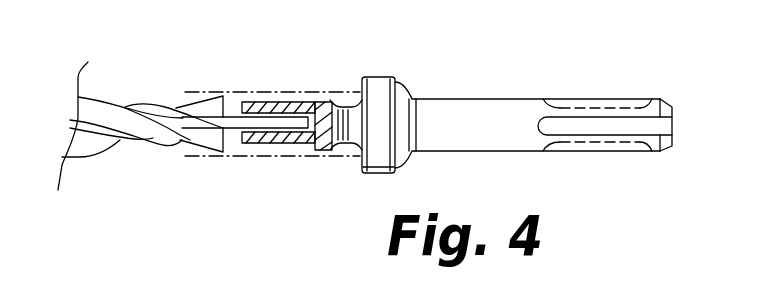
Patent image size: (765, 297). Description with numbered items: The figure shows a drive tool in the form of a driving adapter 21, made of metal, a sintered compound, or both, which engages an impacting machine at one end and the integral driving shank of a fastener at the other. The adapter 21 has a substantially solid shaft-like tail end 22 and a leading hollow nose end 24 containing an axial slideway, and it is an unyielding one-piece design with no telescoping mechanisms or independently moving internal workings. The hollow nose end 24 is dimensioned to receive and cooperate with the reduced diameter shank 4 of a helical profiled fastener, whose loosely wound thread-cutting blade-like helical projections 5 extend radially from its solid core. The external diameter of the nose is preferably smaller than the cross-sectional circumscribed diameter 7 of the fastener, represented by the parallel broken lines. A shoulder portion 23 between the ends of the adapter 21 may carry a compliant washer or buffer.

The reduced diameter shank 4 is at (257, 123).
The thread-cutting blade-like helical projections 5 is at (82, 157).
The cross-sectional circumscribed diameter 7 is at (245, 78).
The driving adapter 21 is at (487, 137).
The shaft-like tail end 22 is at (567, 88).
The shoulder portion 23 is at (384, 88).
The hollow nose end 24 is at (295, 143).